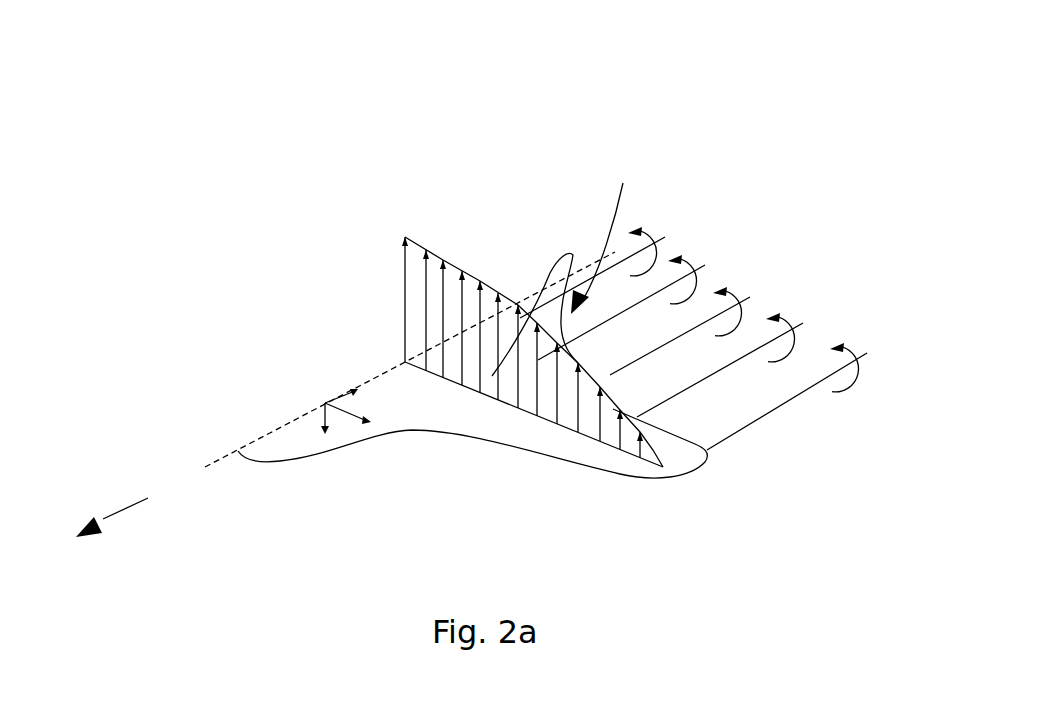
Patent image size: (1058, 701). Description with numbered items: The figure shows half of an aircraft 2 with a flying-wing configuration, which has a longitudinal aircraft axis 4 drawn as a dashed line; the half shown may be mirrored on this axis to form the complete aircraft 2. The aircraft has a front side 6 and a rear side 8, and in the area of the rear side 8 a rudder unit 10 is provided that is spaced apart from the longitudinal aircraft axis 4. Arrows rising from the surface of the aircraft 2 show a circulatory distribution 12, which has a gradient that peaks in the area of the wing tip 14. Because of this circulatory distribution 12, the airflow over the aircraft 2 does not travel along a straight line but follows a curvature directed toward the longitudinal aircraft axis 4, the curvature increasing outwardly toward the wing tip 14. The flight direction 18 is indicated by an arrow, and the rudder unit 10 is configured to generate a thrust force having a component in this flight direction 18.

The aircraft 2 is at (531, 138).
The longitudinal aircraft axis 4 is at (220, 462).
The front side 6 is at (301, 491).
The rear side 8 is at (601, 234).
The rudder unit 10 is at (565, 258).
The circulatory distribution 12 is at (413, 280).
The wing tip 14 is at (745, 496).
The flight direction 18 is at (118, 516).